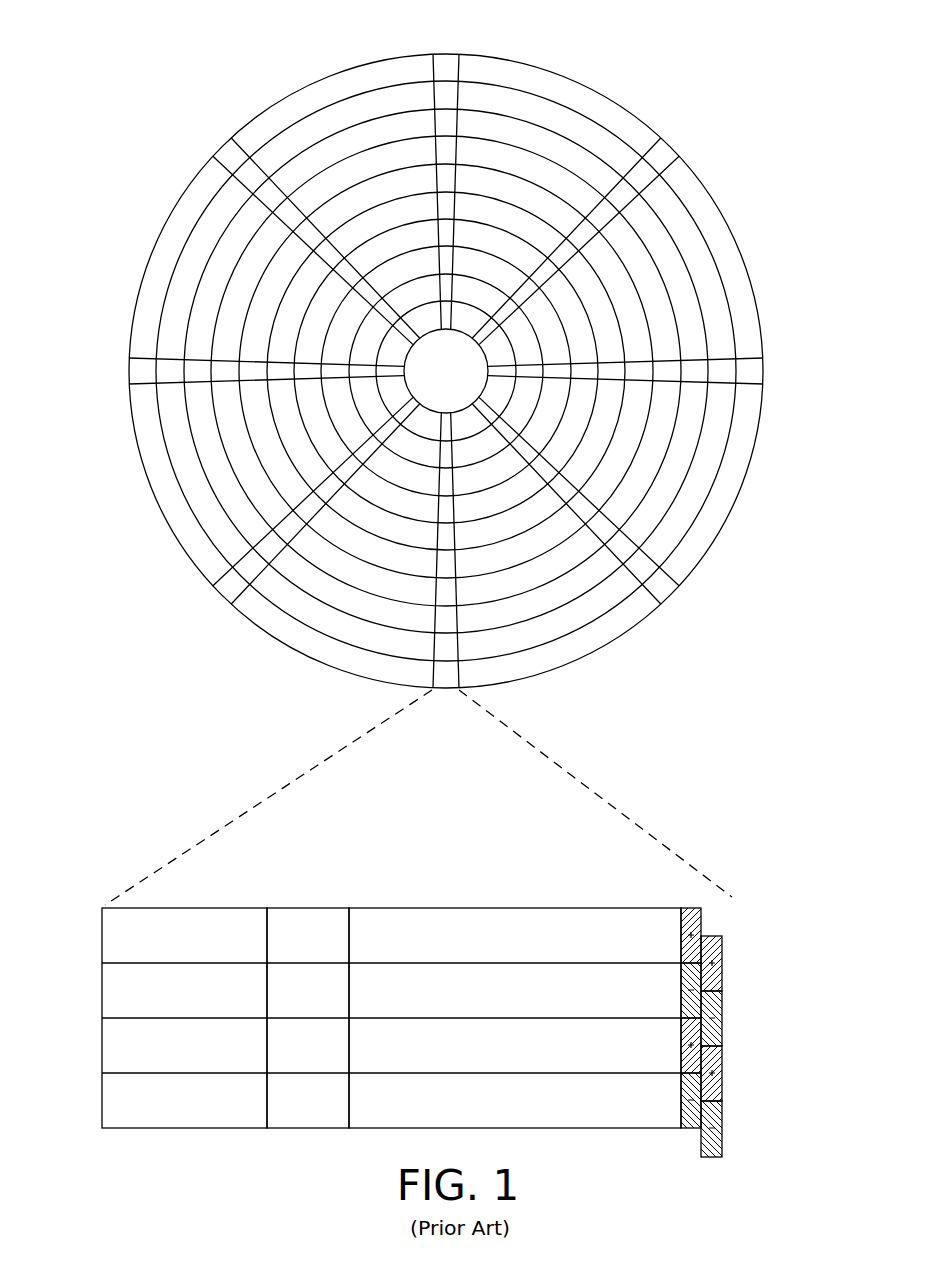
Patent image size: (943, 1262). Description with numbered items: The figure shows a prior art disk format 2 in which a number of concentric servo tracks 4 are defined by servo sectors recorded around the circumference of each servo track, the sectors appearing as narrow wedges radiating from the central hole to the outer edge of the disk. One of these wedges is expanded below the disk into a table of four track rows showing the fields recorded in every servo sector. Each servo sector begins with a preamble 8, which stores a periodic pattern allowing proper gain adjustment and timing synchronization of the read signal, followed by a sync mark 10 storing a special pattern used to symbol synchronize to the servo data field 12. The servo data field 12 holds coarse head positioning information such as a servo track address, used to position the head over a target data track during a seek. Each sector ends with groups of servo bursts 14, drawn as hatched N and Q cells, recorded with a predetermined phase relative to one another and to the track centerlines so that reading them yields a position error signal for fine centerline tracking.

The disk format 2 is at (210, 58).
The servo tracks 4 is at (553, 118).
The preamble 8 is at (191, 907).
The sync mark 10 is at (313, 907).
The servo data field 12 is at (505, 907).
The servo bursts 14 is at (720, 905).